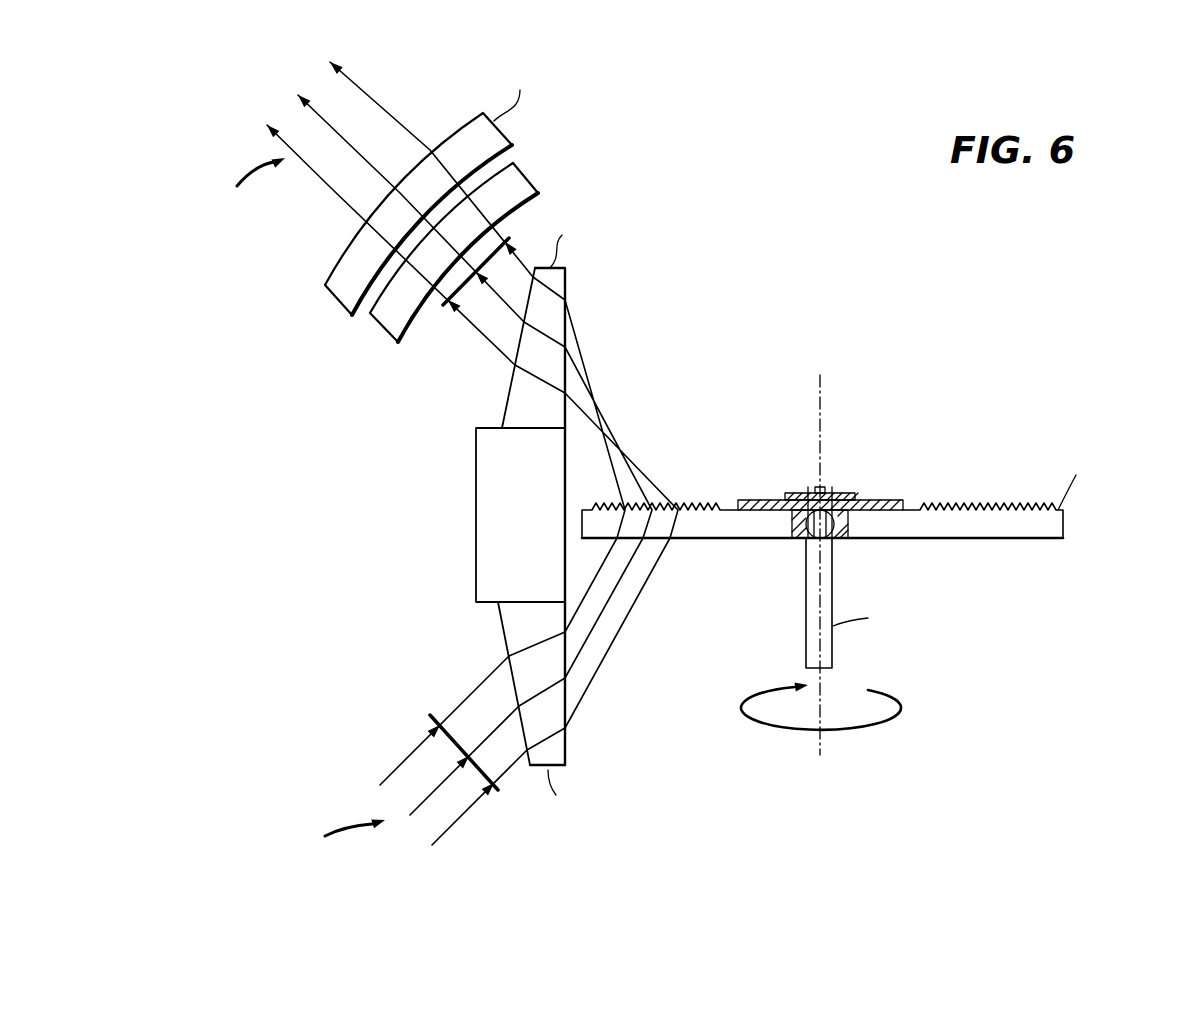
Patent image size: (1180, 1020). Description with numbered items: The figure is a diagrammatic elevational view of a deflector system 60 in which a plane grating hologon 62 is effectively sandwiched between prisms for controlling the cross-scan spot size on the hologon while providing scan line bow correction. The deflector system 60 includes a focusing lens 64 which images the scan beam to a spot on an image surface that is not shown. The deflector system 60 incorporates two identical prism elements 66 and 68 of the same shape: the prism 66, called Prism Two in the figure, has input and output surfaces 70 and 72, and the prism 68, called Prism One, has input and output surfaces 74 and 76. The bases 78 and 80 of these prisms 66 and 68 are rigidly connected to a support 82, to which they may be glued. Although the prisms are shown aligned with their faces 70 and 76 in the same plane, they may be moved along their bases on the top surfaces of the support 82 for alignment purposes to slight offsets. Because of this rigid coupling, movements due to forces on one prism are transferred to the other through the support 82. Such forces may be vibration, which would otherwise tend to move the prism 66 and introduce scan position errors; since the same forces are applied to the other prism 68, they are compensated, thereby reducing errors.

The deflector system 60 is at (816, 322).
The plane grating hologon 62 is at (1066, 532).
The focusing lens 64 is at (545, 143).
The prism element 66 is at (492, 368).
The prism element 68 is at (490, 656).
The input surface 70 is at (567, 292).
The output surface 72 is at (506, 410).
The input surface 74 is at (500, 612).
The output surface 76 is at (566, 752).
The base 78 is at (545, 430).
The base 80 is at (530, 602).
The support 82 is at (476, 522).